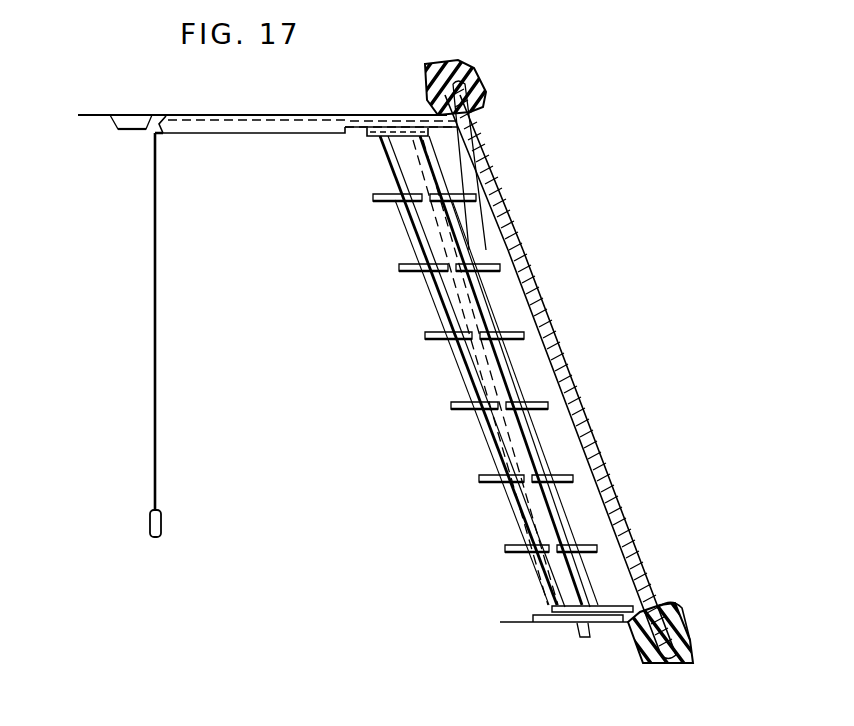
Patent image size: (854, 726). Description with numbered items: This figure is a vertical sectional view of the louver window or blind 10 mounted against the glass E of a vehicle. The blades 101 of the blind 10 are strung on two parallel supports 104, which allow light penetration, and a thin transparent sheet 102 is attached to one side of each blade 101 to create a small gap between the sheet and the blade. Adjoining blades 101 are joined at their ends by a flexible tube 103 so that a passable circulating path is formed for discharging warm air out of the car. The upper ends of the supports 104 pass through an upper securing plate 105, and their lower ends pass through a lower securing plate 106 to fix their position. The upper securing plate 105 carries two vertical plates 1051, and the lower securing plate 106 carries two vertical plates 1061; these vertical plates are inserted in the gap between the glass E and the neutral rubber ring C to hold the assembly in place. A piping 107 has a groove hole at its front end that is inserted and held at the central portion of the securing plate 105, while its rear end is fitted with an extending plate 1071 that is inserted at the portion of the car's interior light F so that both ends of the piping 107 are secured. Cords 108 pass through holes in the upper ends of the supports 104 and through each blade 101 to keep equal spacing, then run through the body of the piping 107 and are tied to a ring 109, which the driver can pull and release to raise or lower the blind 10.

The louver window or blind 10 is at (443, 370).
The blade 101 is at (392, 205).
The transparent sheet 102 is at (372, 196).
The flexible tube 103 is at (440, 243).
The support 104 is at (470, 436).
The securing plate 105 is at (470, 148).
The vertical plate 1051 is at (460, 123).
The securing plate 106 is at (626, 585).
The vertical plate 1061 is at (676, 614).
The piping 107 is at (210, 134).
The extending plate 1071 is at (90, 118).
The cord 108 is at (410, 162).
The ring 109 is at (162, 522).
The neutral rubber ring C is at (484, 84).
The glass E is at (545, 302).
The car's interior light F is at (126, 131).